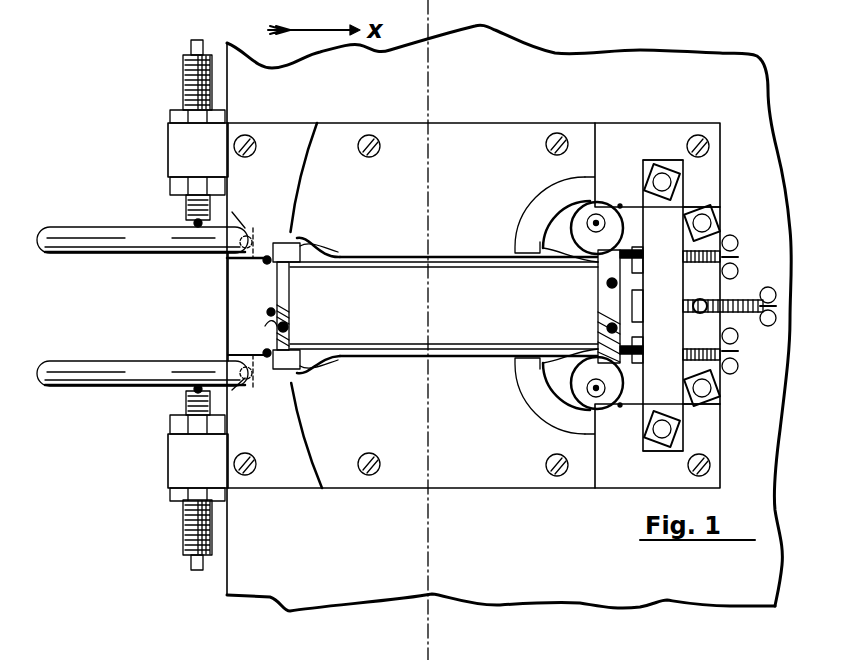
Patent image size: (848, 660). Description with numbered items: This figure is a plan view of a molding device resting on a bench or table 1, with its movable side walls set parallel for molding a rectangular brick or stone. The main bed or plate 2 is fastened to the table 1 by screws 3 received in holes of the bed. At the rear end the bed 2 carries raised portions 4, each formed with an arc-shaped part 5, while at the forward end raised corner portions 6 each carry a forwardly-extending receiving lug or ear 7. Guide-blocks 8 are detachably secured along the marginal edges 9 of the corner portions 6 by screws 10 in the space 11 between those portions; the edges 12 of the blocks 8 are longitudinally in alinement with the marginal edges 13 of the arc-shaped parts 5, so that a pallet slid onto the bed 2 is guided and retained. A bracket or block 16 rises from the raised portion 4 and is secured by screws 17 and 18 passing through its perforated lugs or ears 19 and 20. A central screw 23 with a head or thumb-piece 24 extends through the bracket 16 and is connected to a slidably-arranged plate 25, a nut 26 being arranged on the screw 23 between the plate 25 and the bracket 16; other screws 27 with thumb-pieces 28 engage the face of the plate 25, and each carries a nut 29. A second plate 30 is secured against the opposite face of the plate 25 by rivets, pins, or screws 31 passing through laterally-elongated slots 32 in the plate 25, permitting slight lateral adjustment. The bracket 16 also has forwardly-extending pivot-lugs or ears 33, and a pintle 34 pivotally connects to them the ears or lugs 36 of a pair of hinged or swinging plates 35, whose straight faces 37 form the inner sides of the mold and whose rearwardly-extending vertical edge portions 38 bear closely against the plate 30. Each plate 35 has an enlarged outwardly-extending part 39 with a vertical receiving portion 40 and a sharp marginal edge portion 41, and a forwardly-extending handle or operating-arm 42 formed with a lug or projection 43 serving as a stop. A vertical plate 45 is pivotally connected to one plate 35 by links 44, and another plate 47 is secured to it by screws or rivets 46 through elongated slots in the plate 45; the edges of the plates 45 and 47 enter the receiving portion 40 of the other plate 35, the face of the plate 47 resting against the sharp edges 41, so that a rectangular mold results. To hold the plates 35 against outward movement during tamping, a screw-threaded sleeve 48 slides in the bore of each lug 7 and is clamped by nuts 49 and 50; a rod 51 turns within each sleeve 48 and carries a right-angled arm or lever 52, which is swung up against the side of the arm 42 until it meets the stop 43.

The bench or table 1 is at (543, 55).
The main bed or plate 2 is at (487, 132).
The screws 3 is at (250, 136).
The raised portions 4 is at (620, 132).
The arc-shaped part 5 is at (522, 408).
The raised corner portions 6 is at (305, 163).
The receiving lug or ear 7 is at (168, 142).
The guide-blocks 8 is at (228, 259).
The marginal edges 9 is at (246, 236).
The screws 10 is at (258, 240).
The space 11 is at (227, 291).
The edges 12 is at (266, 262).
The marginal edges 13 is at (520, 248).
The bracket or block 16 is at (663, 288).
The screws 17 is at (657, 178).
The screws 18 is at (714, 224).
The perforated lug or ear 19 is at (650, 162).
The perforated lug or ear 20 is at (722, 210).
The central screw 23 is at (757, 298).
The head or thumb-piece 24 is at (748, 332).
The slidably-arranged plate 25 is at (598, 268).
The nut 26 is at (644, 310).
The screws 27 is at (705, 298).
The heads or thumb-pieces 28 is at (739, 244).
The nut 29 is at (644, 252).
The second plate 30 is at (600, 286).
The rivets, pins, or screws 31 is at (598, 322).
The laterally-elongated slots or openings 32 is at (598, 337).
The pivot-lugs or ears 33 is at (620, 204).
The pintle 34 is at (570, 200).
The hinged or swinging plates 35 is at (398, 258).
The ears or lugs 36 is at (607, 223).
The straight faces 37 is at (458, 343).
The edge portions or members 38 is at (578, 262).
The enlarged outwardly-extending part 39 is at (312, 240).
The receiving portion 40 is at (297, 240).
The sharp marginal edge portion 41 is at (335, 254).
The handle or operating-arm 42 is at (93, 232).
The lug or projection 43 is at (232, 208).
The links 44 is at (270, 310).
The vertical plate 45 is at (292, 276).
The screws or rivets 46 is at (270, 328).
The plate 47 is at (292, 292).
The sleeve 48 is at (184, 70).
The nut 49 is at (172, 113).
The nut 50 is at (171, 186).
The rod 51 is at (196, 46).
The right-angled arm or lever 52 is at (187, 216).